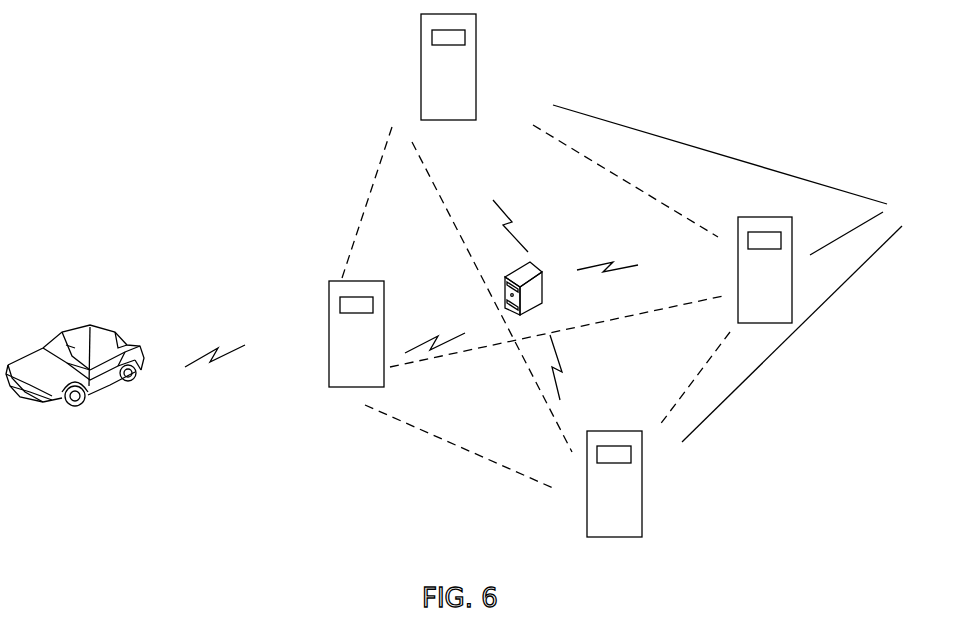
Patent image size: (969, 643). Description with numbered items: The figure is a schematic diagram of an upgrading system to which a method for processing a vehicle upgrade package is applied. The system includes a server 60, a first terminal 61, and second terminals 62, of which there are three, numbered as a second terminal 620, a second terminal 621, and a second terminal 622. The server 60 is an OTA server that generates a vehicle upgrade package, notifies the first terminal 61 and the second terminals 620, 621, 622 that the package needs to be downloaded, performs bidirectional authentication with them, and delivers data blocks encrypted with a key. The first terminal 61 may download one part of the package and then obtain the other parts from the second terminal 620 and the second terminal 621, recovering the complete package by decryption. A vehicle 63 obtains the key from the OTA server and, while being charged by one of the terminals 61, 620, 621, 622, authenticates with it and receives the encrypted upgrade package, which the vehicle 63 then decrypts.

The server 60 is at (543, 287).
The first terminal 61 is at (329, 303).
The second terminal 62 is at (734, 273).
The second terminal 620 is at (421, 58).
The second terminal 621 is at (738, 246).
The second terminal 622 is at (624, 431).
The vehicle 63 is at (80, 327).